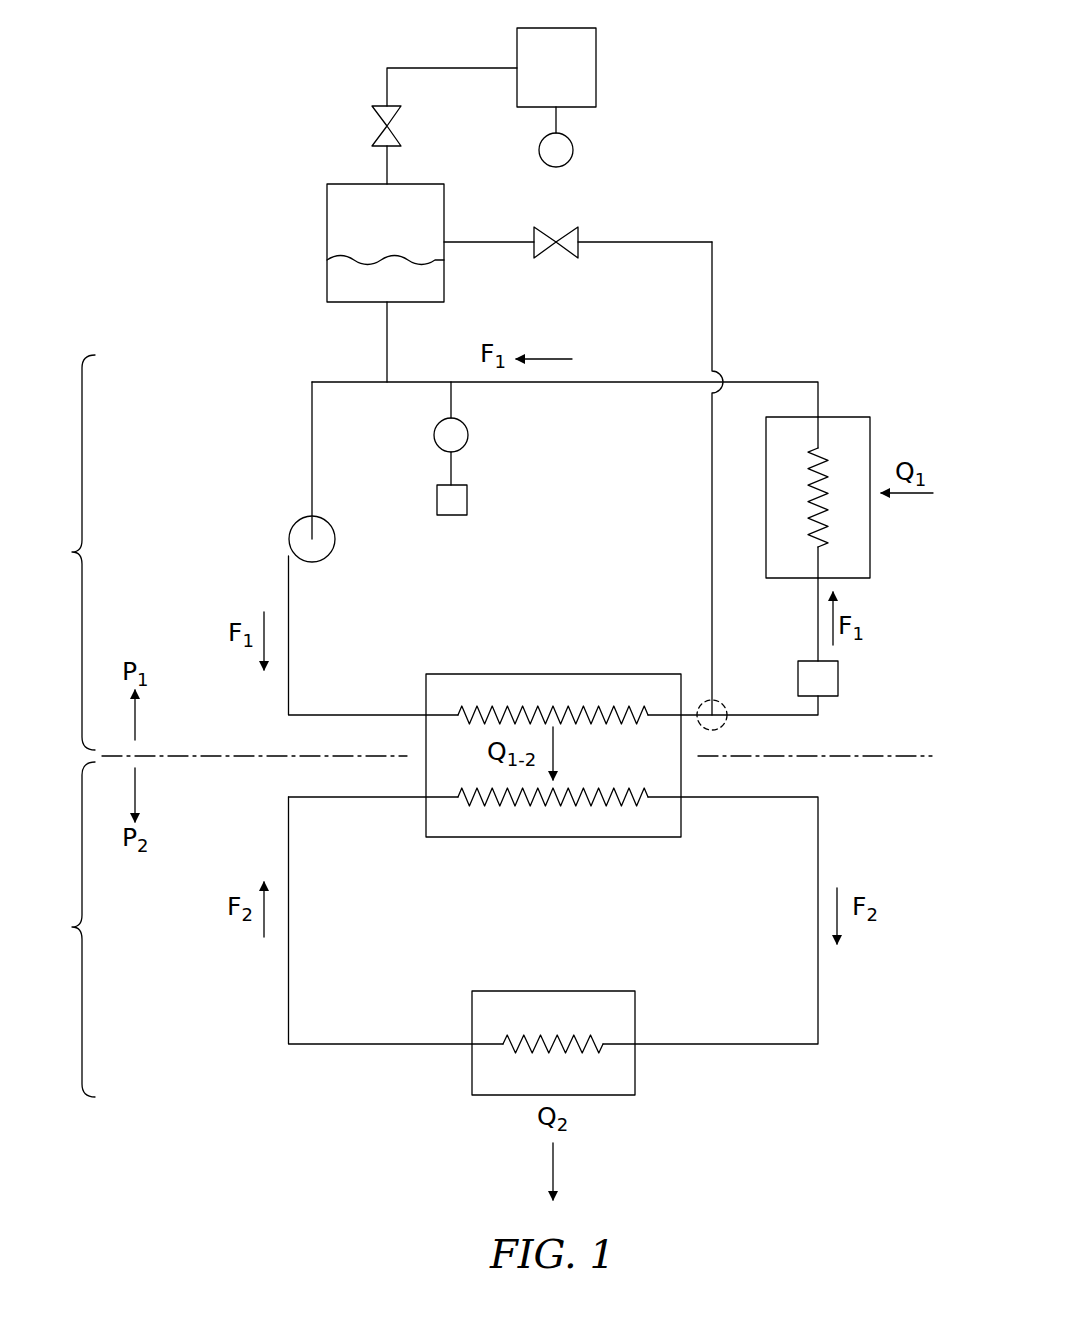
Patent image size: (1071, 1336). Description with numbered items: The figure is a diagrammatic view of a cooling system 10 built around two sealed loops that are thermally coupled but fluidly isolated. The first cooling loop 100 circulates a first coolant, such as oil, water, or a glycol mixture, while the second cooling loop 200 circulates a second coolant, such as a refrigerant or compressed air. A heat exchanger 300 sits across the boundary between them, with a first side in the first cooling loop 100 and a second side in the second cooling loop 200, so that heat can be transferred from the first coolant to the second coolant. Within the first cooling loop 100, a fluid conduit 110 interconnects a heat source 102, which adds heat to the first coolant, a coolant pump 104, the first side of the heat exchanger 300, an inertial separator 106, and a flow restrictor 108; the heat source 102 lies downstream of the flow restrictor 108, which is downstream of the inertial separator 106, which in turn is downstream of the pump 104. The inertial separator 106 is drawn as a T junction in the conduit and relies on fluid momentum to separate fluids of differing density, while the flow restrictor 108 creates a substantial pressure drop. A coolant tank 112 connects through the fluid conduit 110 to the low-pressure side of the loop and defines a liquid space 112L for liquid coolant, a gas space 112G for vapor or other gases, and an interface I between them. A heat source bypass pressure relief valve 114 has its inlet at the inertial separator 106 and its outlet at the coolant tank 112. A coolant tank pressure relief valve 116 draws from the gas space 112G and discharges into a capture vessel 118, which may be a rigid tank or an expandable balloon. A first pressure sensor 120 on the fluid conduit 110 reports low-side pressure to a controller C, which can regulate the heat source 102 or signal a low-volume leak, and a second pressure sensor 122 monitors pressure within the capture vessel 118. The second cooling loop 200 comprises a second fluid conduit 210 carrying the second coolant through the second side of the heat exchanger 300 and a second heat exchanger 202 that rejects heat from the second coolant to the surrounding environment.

The cooling system 10 is at (140, 110).
The first cooling loop 100 is at (56, 552).
The heat source 102 is at (845, 417).
The coolant pump 104 is at (291, 525).
The inertial separator 106 is at (726, 720).
The flow restrictor 108 is at (838, 678).
The fluid conduit 110 is at (312, 405).
The coolant tank 112 is at (350, 184).
The gas space 112G is at (418, 229).
The liquid space 112L is at (417, 295).
The heat source bypass pressure relief valve 114 is at (556, 242).
The coolant tank pressure relief valve 116 is at (380, 106).
The capture vessel 118 is at (556, 28).
The first pressure sensor 120 is at (468, 435).
The second pressure sensor 122 is at (574, 150).
The second cooling loop 200 is at (56, 929).
The second heat exchanger 202 is at (635, 1068).
The second fluid conduit 210 is at (818, 976).
The heat exchanger 300 is at (426, 787).
The controller C is at (467, 500).
The interface I is at (340, 258).